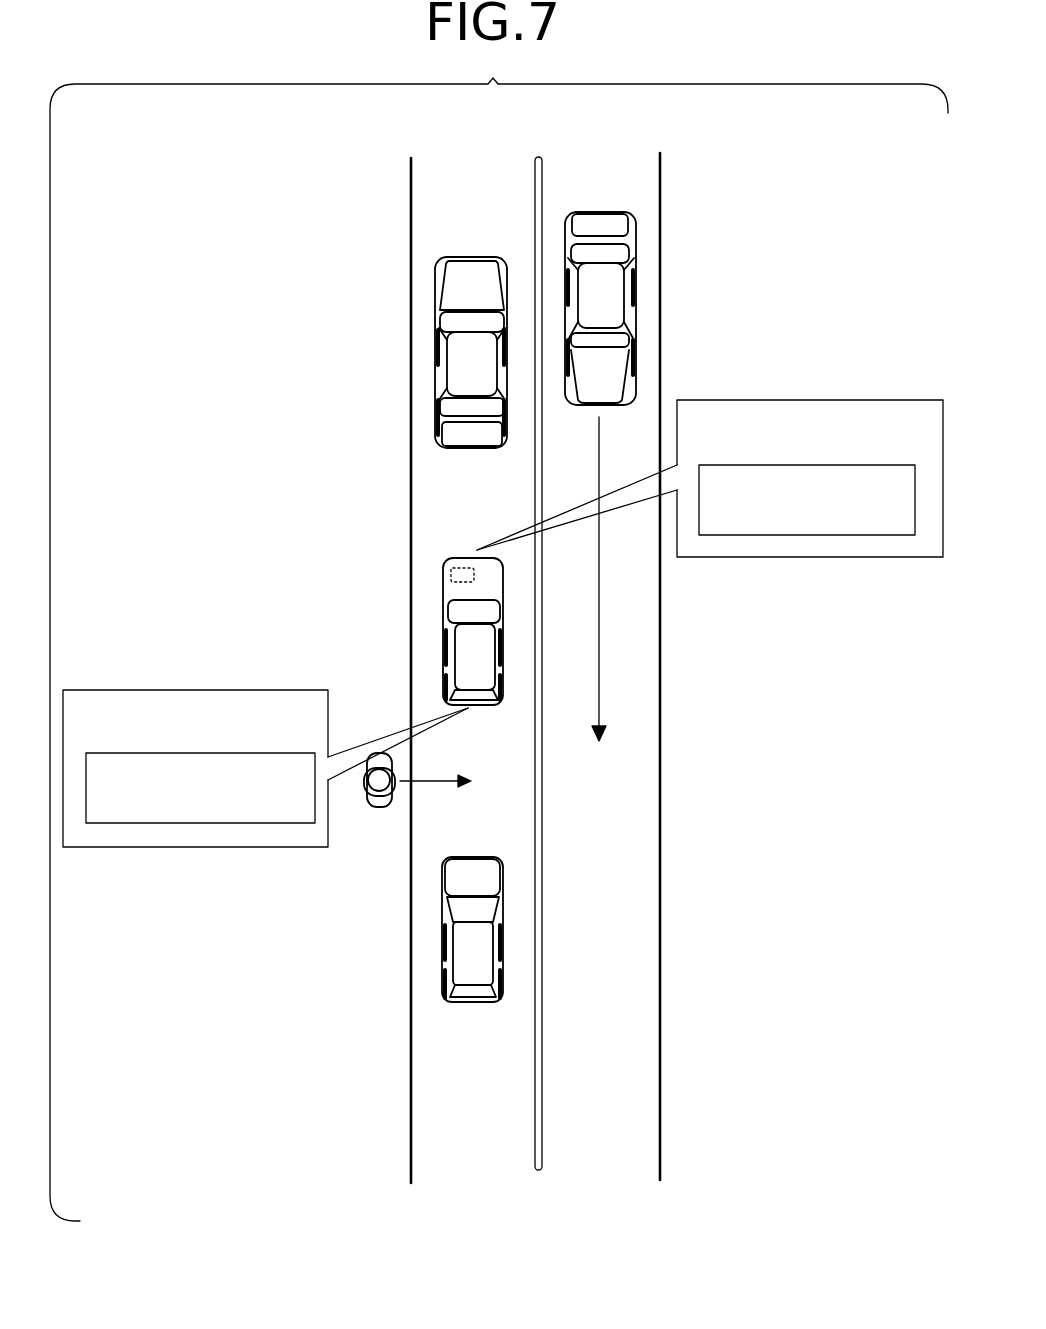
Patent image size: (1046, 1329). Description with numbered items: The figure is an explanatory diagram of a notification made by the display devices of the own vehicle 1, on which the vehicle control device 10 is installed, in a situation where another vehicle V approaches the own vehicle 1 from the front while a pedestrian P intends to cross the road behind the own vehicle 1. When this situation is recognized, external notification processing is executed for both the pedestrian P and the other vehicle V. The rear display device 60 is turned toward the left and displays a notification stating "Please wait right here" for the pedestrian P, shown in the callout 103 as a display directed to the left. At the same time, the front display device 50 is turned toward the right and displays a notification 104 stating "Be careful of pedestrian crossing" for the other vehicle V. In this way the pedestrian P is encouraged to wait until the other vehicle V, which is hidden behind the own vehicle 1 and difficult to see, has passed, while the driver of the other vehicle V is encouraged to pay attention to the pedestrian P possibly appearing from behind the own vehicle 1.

The own vehicle 1 is at (465, 658).
The vehicle control device 10 is at (447, 578).
The front display device 50 is at (903, 465).
The rear display device 60 is at (290, 753).
The display directed to left 103 is at (265, 742).
The notification 104 is at (710, 452).
The other vehicle V is at (636, 368).
The pedestrian P is at (382, 810).